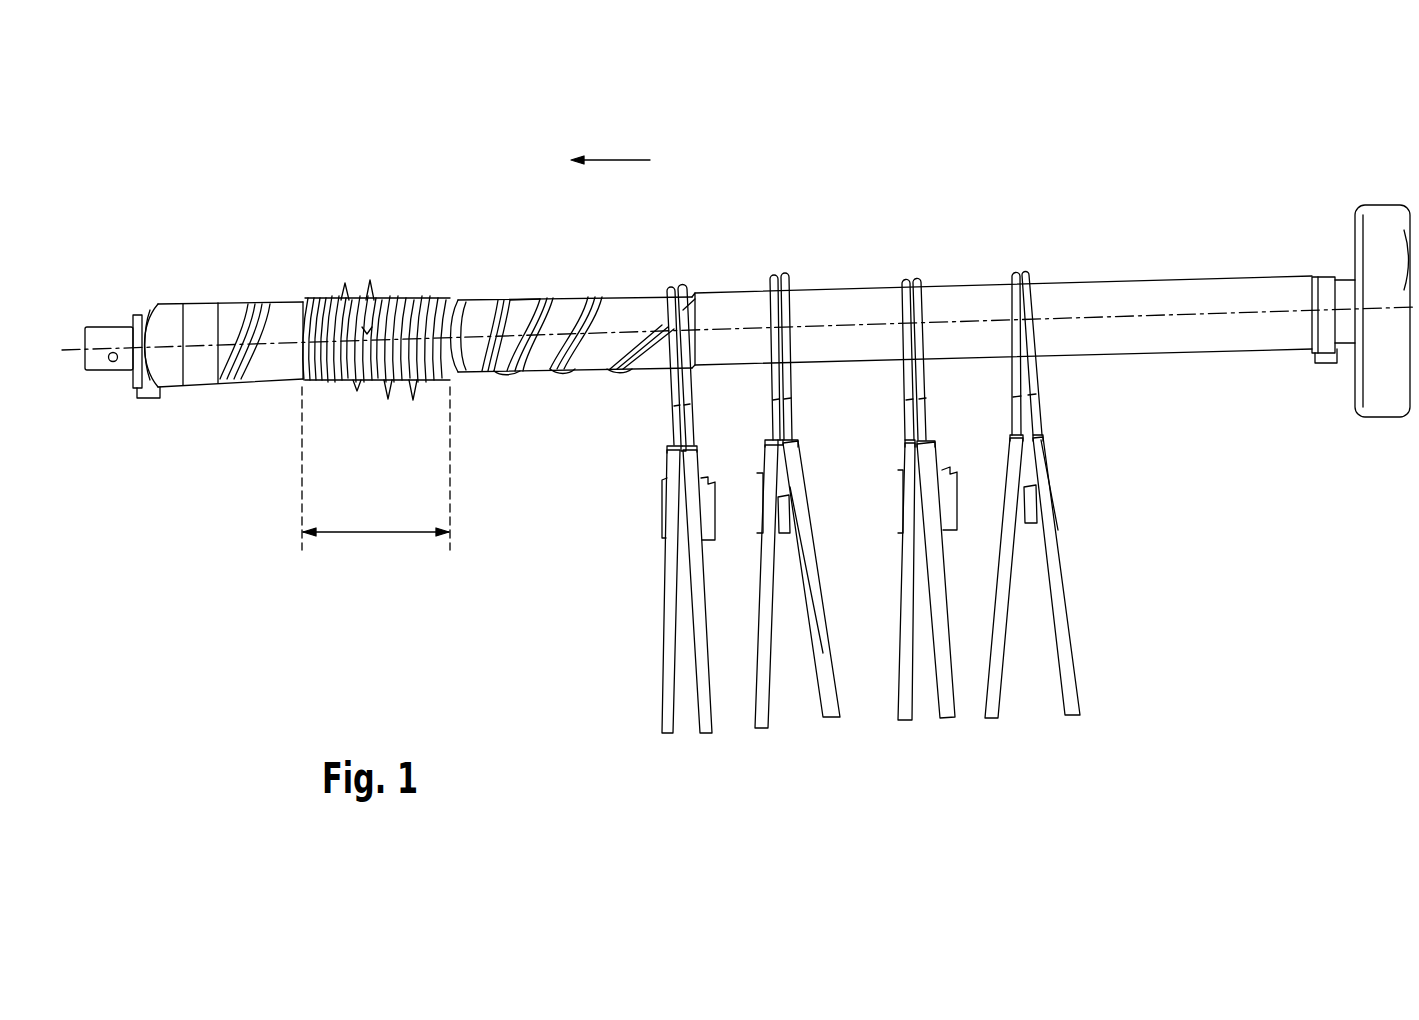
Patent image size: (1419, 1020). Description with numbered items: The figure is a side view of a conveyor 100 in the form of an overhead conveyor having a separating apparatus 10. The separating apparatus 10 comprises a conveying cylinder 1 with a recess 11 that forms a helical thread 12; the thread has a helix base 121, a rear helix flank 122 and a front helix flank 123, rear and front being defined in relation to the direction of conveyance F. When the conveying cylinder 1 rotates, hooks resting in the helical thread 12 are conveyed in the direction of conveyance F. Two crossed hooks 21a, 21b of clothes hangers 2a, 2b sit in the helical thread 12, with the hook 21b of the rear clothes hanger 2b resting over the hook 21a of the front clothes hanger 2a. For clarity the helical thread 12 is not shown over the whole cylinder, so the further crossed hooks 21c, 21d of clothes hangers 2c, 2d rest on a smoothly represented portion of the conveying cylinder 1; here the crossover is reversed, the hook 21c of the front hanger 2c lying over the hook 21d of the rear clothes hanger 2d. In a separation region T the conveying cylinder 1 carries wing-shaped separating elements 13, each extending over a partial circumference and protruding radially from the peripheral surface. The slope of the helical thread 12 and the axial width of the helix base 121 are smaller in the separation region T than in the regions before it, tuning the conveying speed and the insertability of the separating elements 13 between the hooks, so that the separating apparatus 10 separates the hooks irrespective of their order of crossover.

The conveyor 100 is at (1080, 142).
The conveying cylinder 1 is at (636, 222).
The separating apparatus 10 is at (294, 221).
The recess 11 is at (503, 343).
The helical thread 12 is at (494, 390).
The helix base 121 is at (522, 304).
The rear helix flank 122 is at (530, 328).
The front helix flank 123 is at (503, 303).
The wing-shaped separating elements 13 is at (372, 280).
The hook 21a is at (687, 283).
The hook 21b is at (672, 283).
The hook 21c is at (918, 279).
The hook 21d is at (906, 278).
The clothes hanger 2a is at (667, 721).
The clothes hanger 2b is at (707, 722).
The clothes hanger 2c is at (905, 718).
The clothes hanger 2d is at (950, 715).
The direction of conveyance F is at (615, 160).
The separation region T is at (361, 531).